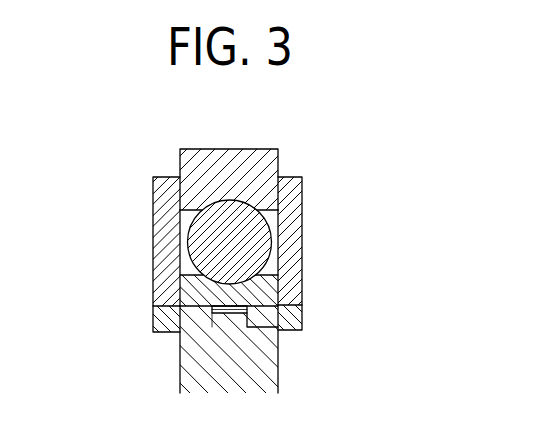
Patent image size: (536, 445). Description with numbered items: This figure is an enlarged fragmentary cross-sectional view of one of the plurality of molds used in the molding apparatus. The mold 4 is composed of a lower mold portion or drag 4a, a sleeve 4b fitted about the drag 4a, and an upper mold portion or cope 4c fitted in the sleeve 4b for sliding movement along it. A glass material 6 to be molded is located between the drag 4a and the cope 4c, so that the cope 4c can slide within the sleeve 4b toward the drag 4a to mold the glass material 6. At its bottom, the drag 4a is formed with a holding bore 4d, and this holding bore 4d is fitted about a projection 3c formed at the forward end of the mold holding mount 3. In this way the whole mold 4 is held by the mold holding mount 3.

The mold holding mount 3 is at (231, 349).
The projection 3c is at (233, 318).
The mold 4 is at (228, 228).
The drag 4a is at (290, 317).
The sleeve 4b is at (152, 248).
The cope 4c is at (278, 163).
The holding bore 4d is at (216, 312).
The glass material 6 is at (269, 230).